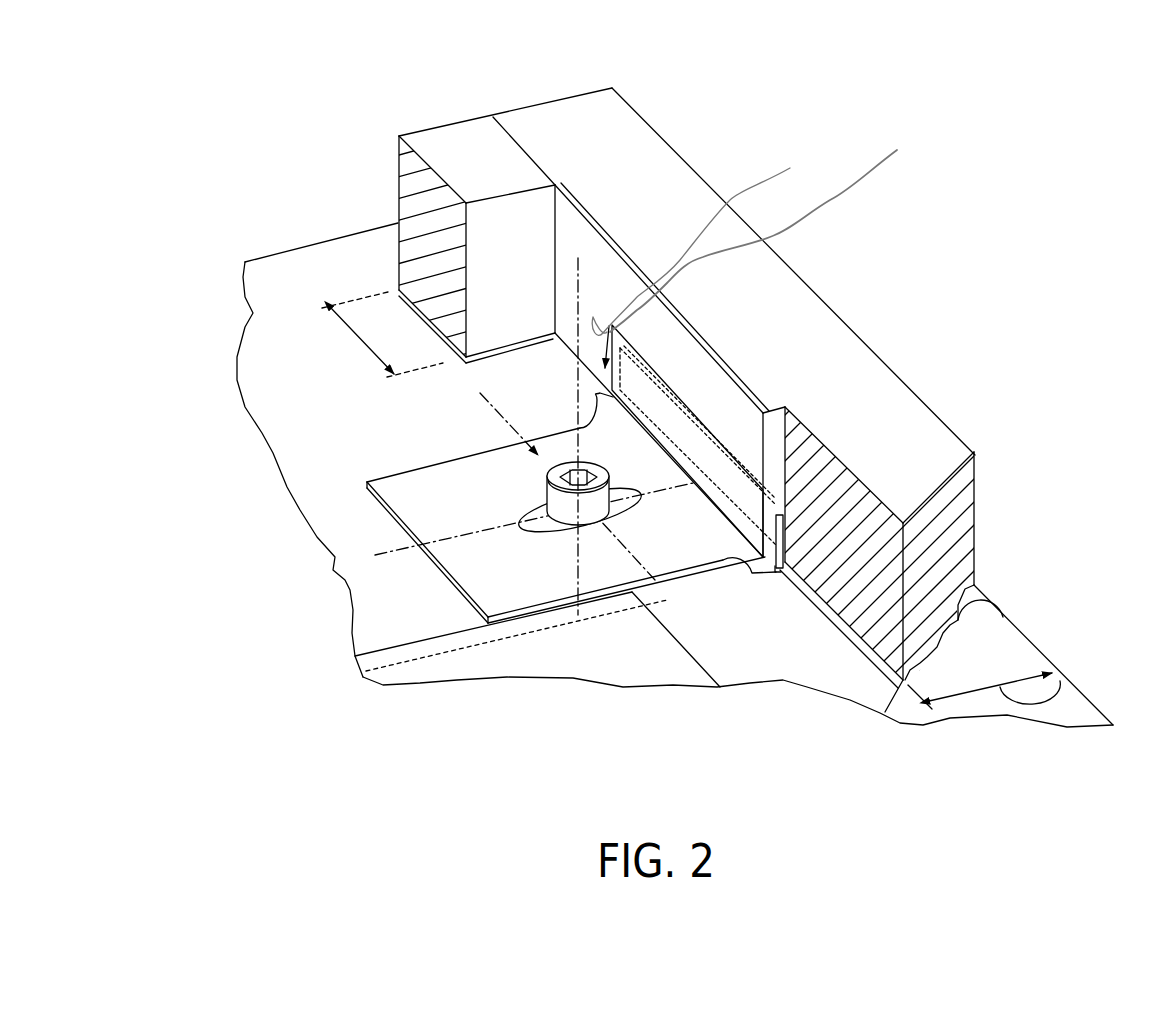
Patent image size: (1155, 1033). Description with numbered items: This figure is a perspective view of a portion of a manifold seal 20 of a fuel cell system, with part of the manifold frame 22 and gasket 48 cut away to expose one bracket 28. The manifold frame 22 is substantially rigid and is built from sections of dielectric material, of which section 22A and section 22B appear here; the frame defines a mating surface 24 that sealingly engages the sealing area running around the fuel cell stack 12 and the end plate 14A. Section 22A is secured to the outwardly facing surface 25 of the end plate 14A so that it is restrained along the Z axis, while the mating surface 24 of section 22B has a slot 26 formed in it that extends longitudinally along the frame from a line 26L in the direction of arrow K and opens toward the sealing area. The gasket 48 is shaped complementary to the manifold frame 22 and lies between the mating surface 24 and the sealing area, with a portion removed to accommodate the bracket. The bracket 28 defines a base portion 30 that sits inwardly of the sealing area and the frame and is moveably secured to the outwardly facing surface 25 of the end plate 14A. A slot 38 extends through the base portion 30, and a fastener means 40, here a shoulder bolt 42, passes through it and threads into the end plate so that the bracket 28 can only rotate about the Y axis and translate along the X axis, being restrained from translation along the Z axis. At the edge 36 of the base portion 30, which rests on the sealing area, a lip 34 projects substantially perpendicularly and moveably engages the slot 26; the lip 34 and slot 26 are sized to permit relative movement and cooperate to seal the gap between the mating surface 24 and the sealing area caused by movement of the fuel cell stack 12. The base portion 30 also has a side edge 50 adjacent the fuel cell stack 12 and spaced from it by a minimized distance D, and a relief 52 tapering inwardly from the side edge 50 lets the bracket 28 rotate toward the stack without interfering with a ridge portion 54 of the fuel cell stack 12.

The fuel cell stack 12 is at (518, 662).
The end plate 14A is at (370, 572).
The manifold seal 20 is at (736, 271).
The manifold frame 22 is at (668, 184).
The manifold frame section 22A is at (458, 148).
The manifold frame section 22B is at (788, 304).
The mating surface 24 is at (1000, 618).
The outwardly facing surface 25 is at (376, 628).
The slot 26 is at (791, 516).
The line 26L is at (777, 235).
The bracket 28 is at (437, 480).
The base portion 30 is at (421, 504).
The lip 34 is at (680, 405).
The edge 36 is at (788, 580).
The slot 38 is at (533, 512).
The fastener means 40 is at (540, 466).
The shoulder bolt 42 is at (626, 529).
The gasket 48 is at (455, 331).
The side edge 50 is at (768, 584).
The relief 52 is at (687, 591).
The ridge portion 54 is at (627, 603).